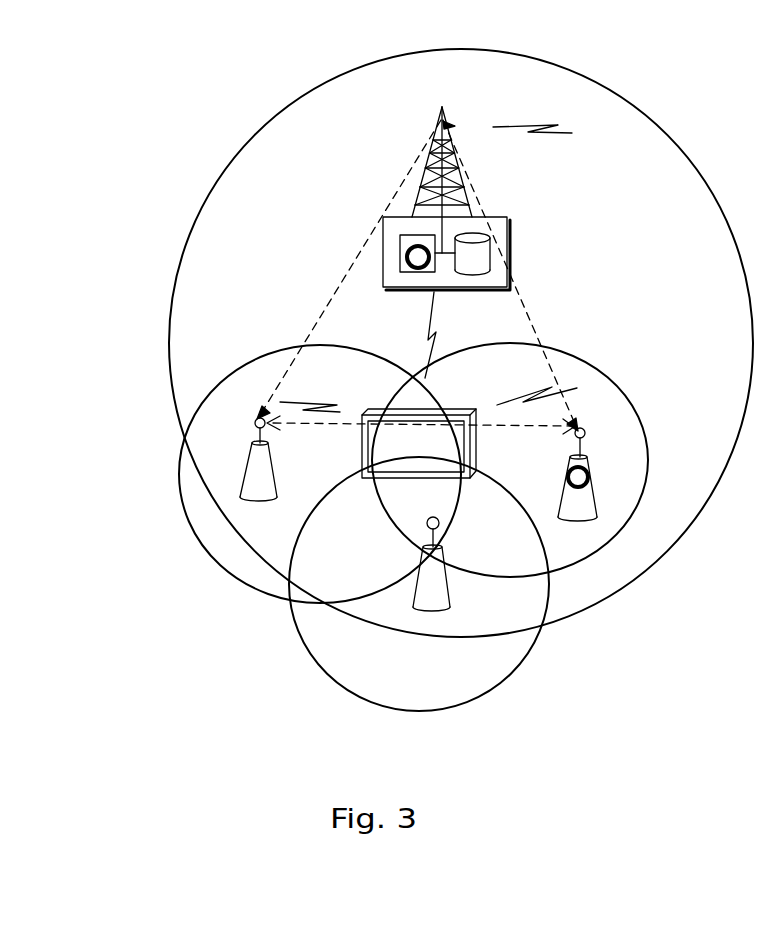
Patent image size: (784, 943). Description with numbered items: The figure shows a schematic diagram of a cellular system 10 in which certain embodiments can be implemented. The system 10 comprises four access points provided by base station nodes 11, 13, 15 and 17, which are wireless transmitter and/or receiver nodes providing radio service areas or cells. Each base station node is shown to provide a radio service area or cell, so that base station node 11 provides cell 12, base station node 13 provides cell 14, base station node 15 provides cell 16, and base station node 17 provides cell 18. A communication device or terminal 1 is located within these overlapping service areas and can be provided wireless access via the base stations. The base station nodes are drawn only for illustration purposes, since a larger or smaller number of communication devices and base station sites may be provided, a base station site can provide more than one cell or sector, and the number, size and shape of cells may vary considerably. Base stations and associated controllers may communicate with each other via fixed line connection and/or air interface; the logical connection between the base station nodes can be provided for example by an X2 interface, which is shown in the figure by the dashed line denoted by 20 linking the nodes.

The system 10 is at (142, 130).
The base station node 11 is at (383, 238).
The radio service area or cell 12 is at (187, 242).
The X2 interface 20 is at (297, 348).
The base station node 15 is at (252, 457).
The radio service area or cell 16 is at (179, 485).
The base station node 17 is at (590, 490).
The radio service area or cell 18 is at (653, 567).
The base station node 13 is at (450, 605).
The radio service area or cell 14 is at (497, 690).
The communication device or terminal 1 is at (412, 447).